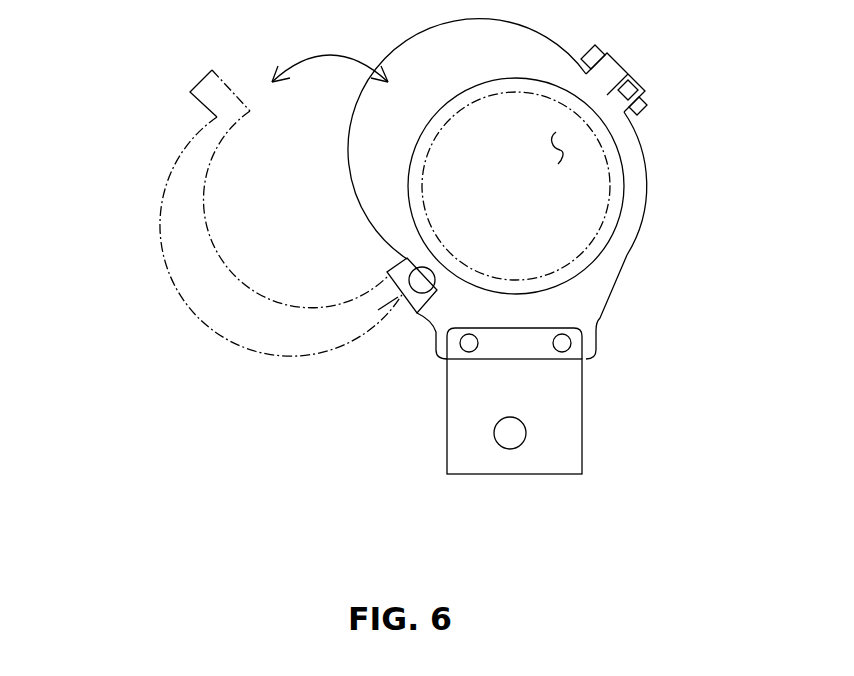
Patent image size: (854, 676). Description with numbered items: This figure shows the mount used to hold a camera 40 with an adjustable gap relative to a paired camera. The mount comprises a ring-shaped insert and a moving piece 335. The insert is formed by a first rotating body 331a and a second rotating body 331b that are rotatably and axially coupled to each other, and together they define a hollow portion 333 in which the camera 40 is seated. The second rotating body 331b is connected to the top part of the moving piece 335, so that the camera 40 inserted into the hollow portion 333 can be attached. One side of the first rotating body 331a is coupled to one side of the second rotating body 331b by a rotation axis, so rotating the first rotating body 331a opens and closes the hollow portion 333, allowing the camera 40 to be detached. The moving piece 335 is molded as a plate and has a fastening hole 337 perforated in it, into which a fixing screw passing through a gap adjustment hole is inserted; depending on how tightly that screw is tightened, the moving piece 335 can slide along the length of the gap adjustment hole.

The first rotating body 331a is at (383, 189).
The second rotating body 331b is at (597, 282).
The hollow portion 333 is at (560, 150).
The camera 40 is at (614, 186).
The moving piece 335 is at (465, 400).
The fastening hole 337 is at (509, 434).